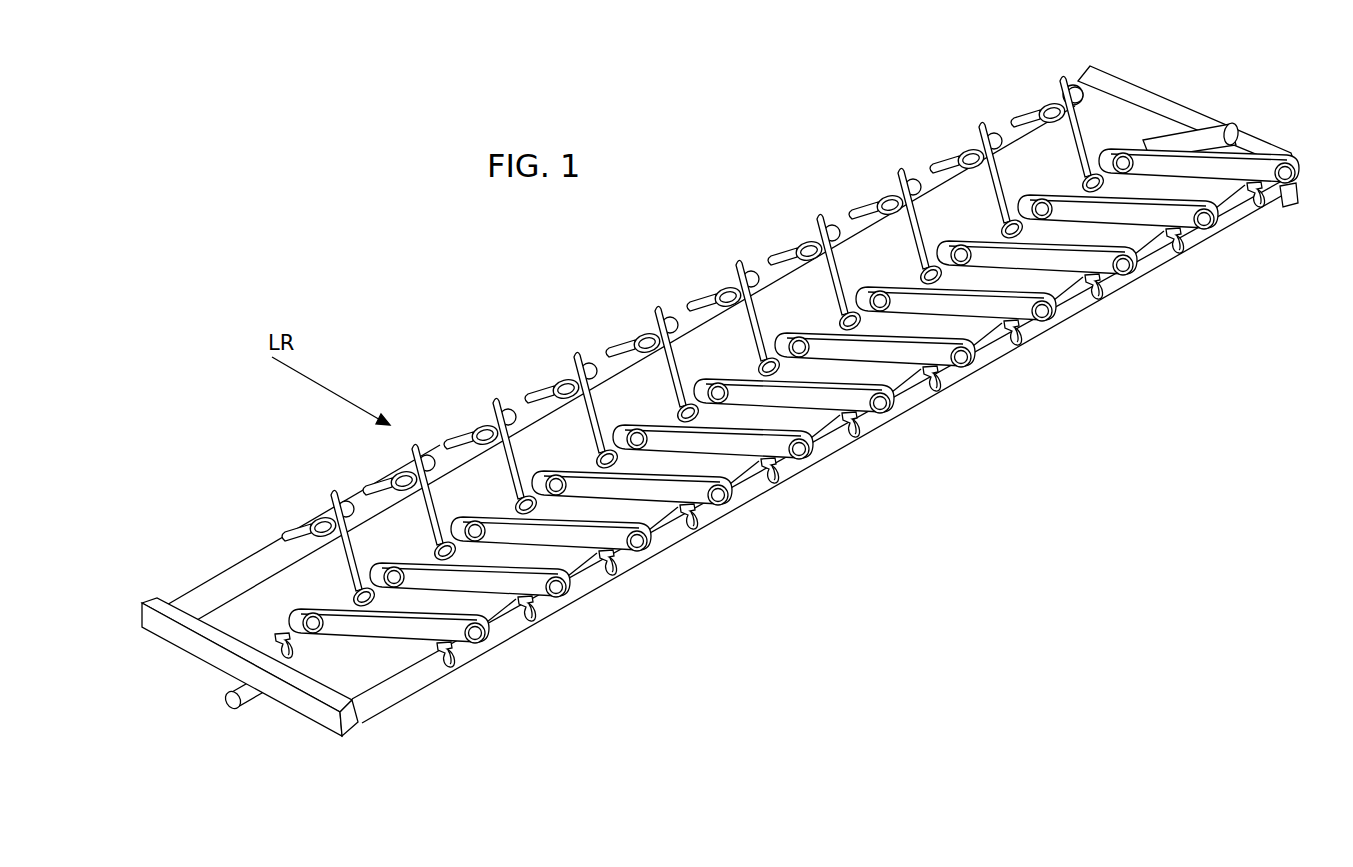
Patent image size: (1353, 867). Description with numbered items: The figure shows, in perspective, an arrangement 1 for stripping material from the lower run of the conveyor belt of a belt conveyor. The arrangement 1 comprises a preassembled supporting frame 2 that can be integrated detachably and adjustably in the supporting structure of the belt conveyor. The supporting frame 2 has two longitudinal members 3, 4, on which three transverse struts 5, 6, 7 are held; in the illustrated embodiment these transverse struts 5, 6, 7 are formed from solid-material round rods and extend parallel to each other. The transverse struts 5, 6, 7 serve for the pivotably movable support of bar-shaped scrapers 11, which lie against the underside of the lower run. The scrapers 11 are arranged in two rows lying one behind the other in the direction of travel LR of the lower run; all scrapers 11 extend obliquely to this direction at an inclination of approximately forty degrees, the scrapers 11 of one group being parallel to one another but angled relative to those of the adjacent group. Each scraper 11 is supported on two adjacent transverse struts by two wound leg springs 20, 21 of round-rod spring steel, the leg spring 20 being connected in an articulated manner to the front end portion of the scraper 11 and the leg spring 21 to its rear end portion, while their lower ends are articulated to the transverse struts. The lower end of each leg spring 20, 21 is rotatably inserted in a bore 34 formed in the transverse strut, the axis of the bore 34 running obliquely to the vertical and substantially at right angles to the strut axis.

The arrangement for stripping material 1 is at (834, 185).
The supporting frame 2 is at (1187, 95).
The longitudinal member 3 is at (1162, 112).
The longitudinal member 4 is at (178, 637).
The transverse strut 5 is at (235, 578).
The transverse strut 6 is at (278, 658).
The transverse strut 7 is at (387, 697).
The scraper 11 is at (790, 387).
The leg spring 20 is at (300, 517).
The leg spring 21 is at (402, 603).
The bore 34 is at (927, 170).